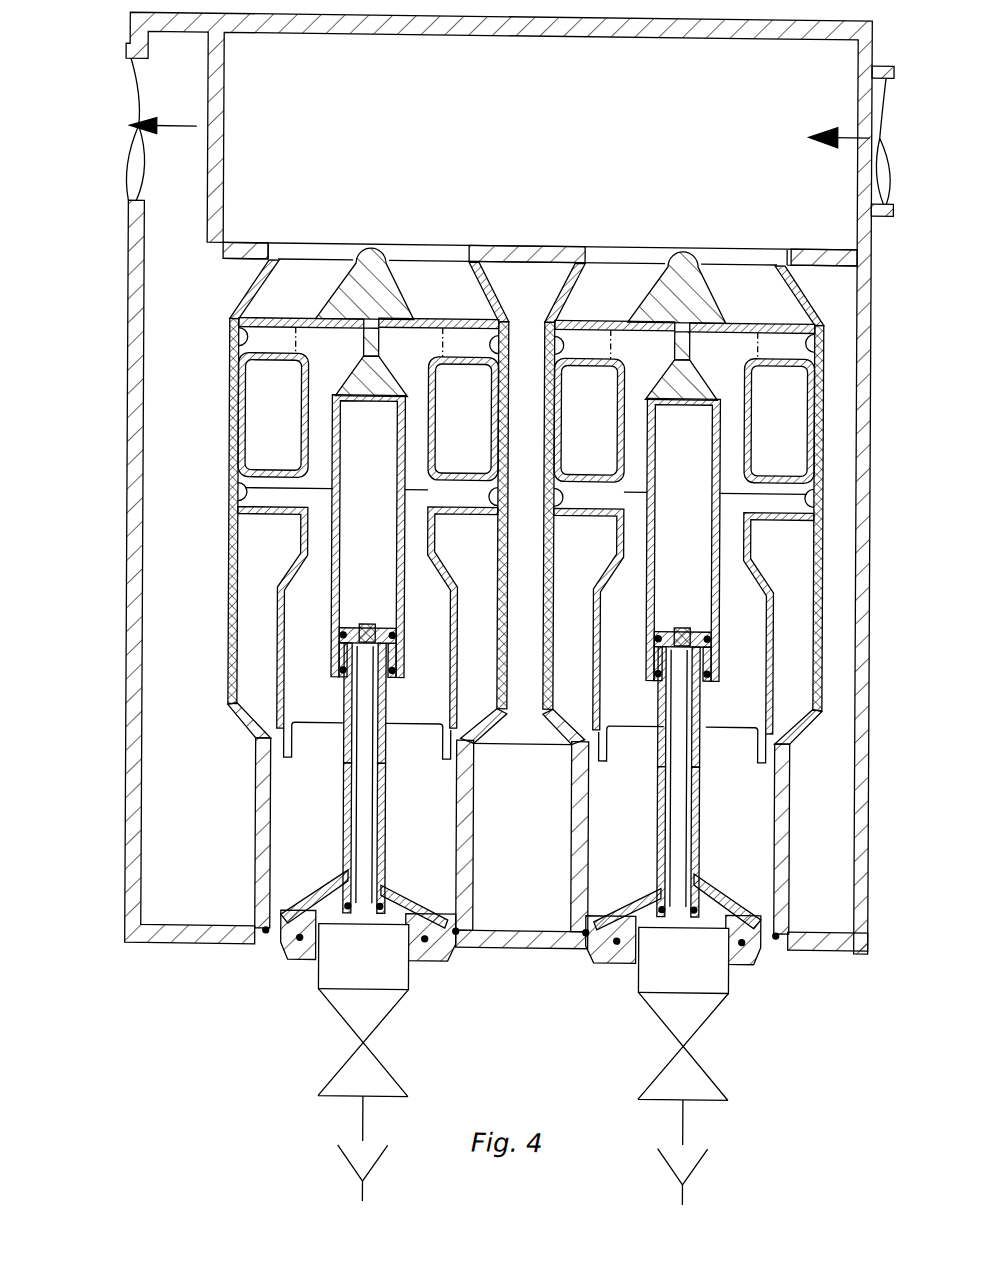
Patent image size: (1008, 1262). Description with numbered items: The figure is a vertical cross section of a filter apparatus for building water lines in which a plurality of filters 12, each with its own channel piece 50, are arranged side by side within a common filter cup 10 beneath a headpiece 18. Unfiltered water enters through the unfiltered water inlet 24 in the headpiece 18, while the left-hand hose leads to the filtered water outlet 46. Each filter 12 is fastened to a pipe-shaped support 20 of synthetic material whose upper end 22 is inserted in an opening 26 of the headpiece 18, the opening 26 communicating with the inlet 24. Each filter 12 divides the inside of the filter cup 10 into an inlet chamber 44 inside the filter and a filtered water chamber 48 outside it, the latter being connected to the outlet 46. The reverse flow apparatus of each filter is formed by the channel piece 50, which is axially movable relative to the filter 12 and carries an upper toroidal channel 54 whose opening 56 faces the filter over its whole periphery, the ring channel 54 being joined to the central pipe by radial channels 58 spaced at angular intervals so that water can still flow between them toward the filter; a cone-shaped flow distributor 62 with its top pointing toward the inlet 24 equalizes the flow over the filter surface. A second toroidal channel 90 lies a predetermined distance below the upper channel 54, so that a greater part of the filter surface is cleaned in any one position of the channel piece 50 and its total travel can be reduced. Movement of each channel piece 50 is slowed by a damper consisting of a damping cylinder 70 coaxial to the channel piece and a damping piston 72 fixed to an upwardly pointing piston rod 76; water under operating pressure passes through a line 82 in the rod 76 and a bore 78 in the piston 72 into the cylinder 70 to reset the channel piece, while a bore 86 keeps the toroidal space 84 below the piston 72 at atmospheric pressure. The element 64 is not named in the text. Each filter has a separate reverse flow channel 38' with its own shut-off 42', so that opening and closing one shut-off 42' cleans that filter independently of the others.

The filter cup 10 is at (134, 640).
The filter 12 is at (229, 580).
The headpiece 18 is at (690, 40).
The pipe-shaped support 20 is at (238, 726).
The upper end of support 22 is at (478, 248).
The unfiltered water inlet 24 is at (856, 204).
The opening of headpiece 26 is at (277, 262).
The reverse flow channel 38' is at (522, 1150).
The shut-off 42' is at (523, 1012).
The inlet chamber 44 is at (265, 426).
The filtered water outlet 46 is at (140, 206).
The filtered water chamber 48 is at (199, 912).
The channel piece 50 is at (270, 638).
The toroidal channel 54 is at (262, 332).
The opening of ring channel 56 is at (232, 348).
The radial channels 58 is at (292, 352).
The cone-shaped flow distributor 62 is at (370, 252).
The support foot 64 is at (275, 688).
The damping cylinder 70 is at (232, 495).
The damping piston 72 is at (360, 630).
The piston rod 76 is at (385, 802).
The bore in piston 78 is at (370, 630).
The line in piston rod 82 is at (365, 806).
The toroidal space 84 is at (340, 664).
The bore 86 is at (355, 705).
The second toroidal channel 90 is at (460, 481).